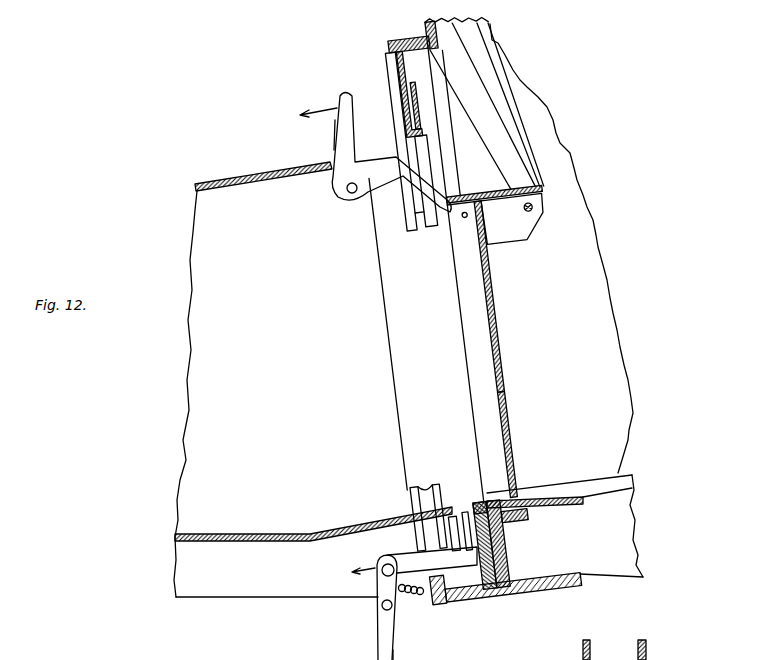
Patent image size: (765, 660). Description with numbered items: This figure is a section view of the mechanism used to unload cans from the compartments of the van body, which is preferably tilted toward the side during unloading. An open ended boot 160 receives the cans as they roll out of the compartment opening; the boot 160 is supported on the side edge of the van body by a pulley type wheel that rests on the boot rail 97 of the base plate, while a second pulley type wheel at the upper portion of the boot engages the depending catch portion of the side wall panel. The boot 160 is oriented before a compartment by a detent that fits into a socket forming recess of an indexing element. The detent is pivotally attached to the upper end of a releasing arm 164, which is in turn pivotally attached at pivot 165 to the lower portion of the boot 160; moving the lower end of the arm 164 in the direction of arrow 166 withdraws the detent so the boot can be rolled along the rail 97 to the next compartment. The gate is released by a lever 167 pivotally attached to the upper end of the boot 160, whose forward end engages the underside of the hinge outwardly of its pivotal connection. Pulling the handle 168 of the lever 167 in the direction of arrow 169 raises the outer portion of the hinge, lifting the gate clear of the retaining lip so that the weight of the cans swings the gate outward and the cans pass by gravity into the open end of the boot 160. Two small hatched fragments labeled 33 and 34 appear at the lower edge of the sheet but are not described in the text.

The bar 33 is at (599, 650).
The bar 34 is at (654, 650).
The boot rail 97 is at (440, 569).
The boot 160 is at (260, 178).
The releasing arm 164 is at (380, 636).
The pivotal attachment 165 is at (392, 612).
The arrow 166 is at (408, 649).
The lever 167 is at (337, 136).
The handle 168 is at (345, 93).
The arrow 169 is at (320, 106).